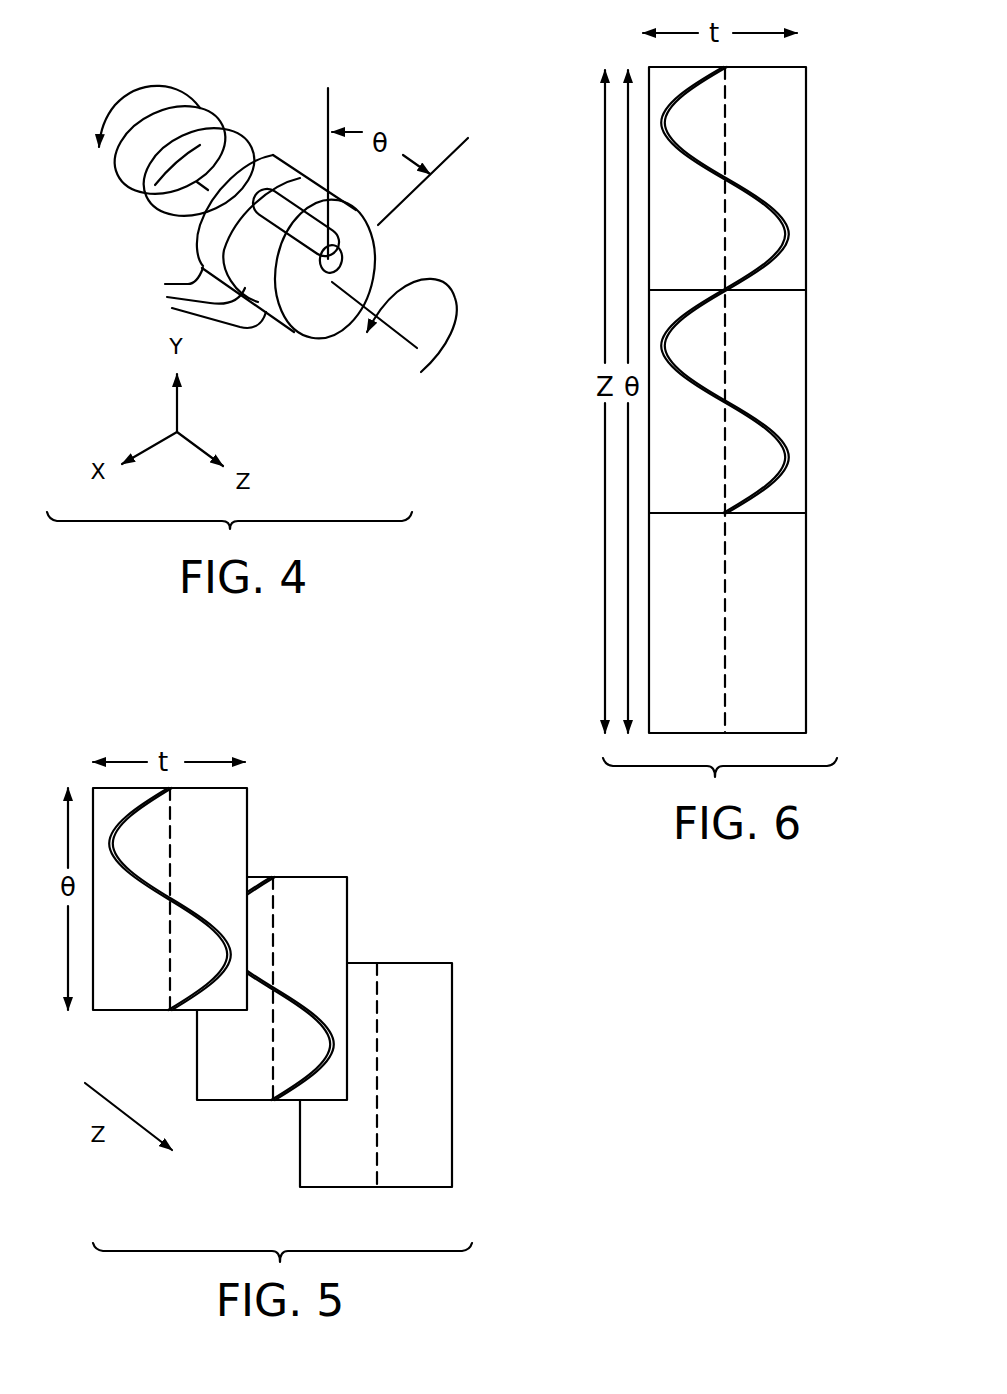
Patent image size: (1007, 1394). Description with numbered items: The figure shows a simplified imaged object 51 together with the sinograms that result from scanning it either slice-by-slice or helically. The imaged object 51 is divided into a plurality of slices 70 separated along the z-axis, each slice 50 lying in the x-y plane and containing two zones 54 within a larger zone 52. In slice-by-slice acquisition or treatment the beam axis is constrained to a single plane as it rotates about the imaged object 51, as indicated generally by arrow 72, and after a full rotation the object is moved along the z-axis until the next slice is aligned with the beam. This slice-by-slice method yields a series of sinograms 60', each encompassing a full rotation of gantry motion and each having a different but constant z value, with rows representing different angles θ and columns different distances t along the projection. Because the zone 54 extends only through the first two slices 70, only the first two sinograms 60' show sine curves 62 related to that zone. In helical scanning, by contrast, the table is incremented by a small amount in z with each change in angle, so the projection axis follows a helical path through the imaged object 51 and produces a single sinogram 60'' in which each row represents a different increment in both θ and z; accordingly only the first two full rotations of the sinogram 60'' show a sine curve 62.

In FIG. 4, the slice 50 is at (303, 340).
In FIG. 4, the imaged object 51 is at (368, 397).
In FIG. 4, the larger zone 52 is at (333, 332).
In FIG. 4, the zone 54 is at (345, 260).
In FIG. 4, the slices 70 is at (197, 298).
In FIG. 4, the arrow 72 is at (448, 283).
In FIG. 5, the sinograms 60' is at (272, 948).
In FIG. 6, the helically acquired sinogram 60'' is at (774, 390).
In FIG. 5, the sine curves 62 is at (287, 992).
In FIG. 6, the sine curves 62 is at (678, 93).